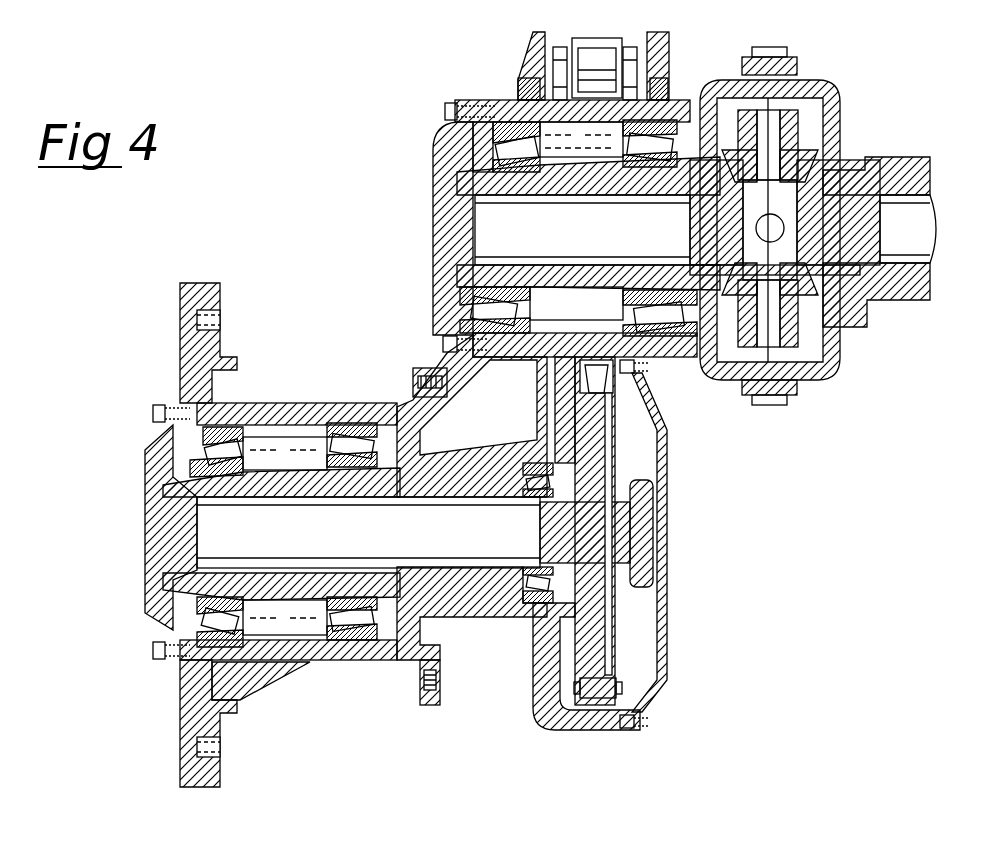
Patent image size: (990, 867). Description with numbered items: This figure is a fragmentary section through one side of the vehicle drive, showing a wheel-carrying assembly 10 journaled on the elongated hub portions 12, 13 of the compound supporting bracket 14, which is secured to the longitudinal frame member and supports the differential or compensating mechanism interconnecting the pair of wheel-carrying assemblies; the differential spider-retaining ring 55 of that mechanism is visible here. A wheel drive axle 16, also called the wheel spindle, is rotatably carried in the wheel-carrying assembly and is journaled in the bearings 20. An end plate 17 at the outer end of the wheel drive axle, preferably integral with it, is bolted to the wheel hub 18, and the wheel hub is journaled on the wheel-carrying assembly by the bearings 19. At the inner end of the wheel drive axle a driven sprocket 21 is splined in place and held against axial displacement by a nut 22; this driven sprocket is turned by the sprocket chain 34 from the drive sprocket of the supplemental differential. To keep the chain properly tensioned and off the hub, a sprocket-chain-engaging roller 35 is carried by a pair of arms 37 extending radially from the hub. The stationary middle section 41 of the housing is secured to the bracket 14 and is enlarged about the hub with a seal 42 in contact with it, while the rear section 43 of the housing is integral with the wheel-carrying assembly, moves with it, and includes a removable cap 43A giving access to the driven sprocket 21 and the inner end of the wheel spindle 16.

The wheel-carrying assembly 10 is at (520, 118).
The elongated hub portion 12 is at (563, 183).
The elongated hub portion 13 is at (887, 167).
The compound supporting bracket 14 is at (820, 373).
The wheel drive axle 16 is at (396, 533).
The end plate 17 is at (170, 533).
The wheel hub 18 is at (187, 357).
The bearings 19 is at (333, 427).
The bearings 20 is at (537, 467).
The driven sprocket 21 is at (605, 440).
The nut 22 is at (640, 530).
The sprocket chain 34 is at (603, 690).
The sprocket-chain-engaging roller 35 is at (610, 63).
The arms 37 is at (560, 63).
The middle section of the housing 41 is at (520, 72).
The seal 42 is at (520, 93).
The rear section of the housing 43 is at (540, 703).
The removable cap 43A is at (667, 597).
The differential spider-retaining ring 55 is at (790, 147).